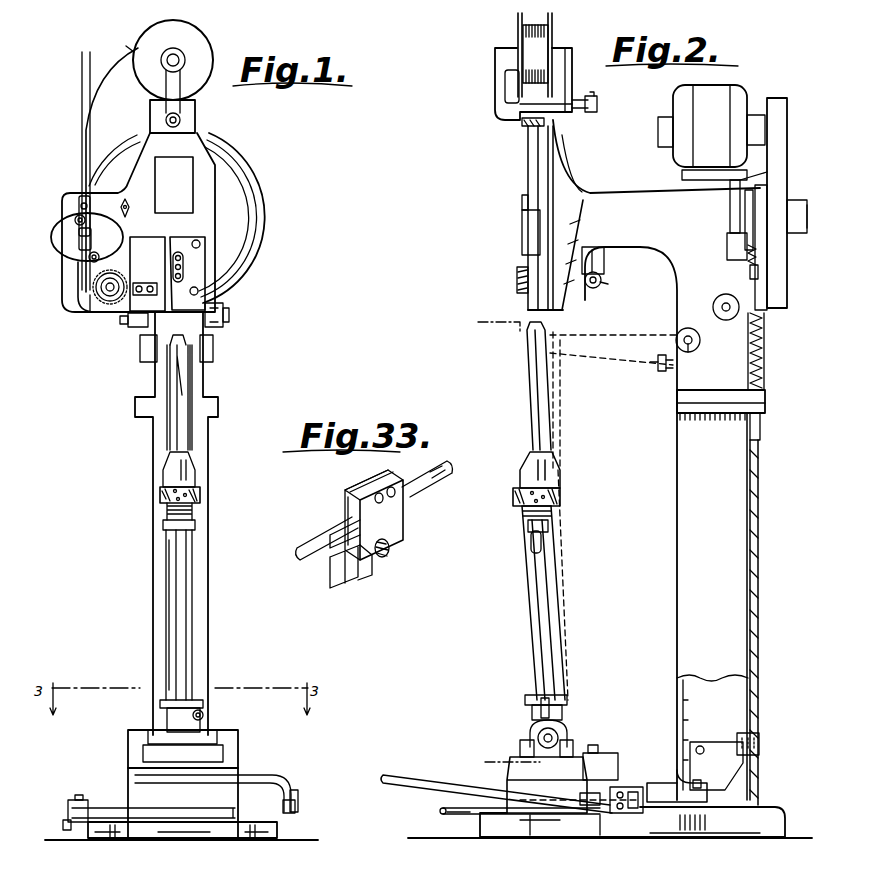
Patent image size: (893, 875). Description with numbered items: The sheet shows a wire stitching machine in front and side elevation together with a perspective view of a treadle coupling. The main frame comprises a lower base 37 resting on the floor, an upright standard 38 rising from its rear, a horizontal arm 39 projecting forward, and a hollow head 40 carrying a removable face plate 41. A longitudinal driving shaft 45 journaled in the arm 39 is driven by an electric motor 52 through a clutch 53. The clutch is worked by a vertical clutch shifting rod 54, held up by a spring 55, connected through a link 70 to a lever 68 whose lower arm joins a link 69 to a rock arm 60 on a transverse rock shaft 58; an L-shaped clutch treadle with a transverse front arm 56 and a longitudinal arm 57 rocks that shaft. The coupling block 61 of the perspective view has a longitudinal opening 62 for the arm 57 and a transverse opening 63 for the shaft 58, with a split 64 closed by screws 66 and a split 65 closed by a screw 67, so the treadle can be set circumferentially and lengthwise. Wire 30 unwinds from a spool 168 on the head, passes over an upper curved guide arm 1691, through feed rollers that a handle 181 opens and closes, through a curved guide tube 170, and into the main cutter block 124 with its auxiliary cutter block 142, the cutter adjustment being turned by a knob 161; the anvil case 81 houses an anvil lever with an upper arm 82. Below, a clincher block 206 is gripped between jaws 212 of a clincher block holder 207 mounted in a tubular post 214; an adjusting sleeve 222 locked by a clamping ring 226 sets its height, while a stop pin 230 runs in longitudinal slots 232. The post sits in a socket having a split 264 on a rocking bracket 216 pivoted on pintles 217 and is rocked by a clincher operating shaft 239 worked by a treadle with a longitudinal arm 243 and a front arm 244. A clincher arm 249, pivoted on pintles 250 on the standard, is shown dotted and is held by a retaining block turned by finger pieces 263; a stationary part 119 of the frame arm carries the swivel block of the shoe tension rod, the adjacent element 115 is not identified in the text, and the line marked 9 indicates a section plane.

In FIG. 1, the wire 30 is at (128, 52).
In FIG. 2, the wire 30 is at (523, 42).
In FIG. 1, the spool 168 is at (192, 30).
In FIG. 2, the spool 168 is at (554, 40).
In FIG. 1, the upper curved guide arm 1691 is at (91, 114).
In FIG. 2, the upper curved guide arm 1691 is at (532, 133).
In FIG. 1, the electric motor 52 is at (203, 121).
In FIG. 33, the electric motor 52 is at (390, 552).
In FIG. 2, the electric motor 52 is at (711, 132).
In FIG. 1, the face plate 41 is at (185, 185).
In FIG. 2, the face plate 41 is at (539, 161).
In FIG. 1, the handle 181 is at (128, 214).
In FIG. 1, the anvil case 81 is at (186, 243).
In FIG. 2, the anvil case 81 is at (528, 245).
In FIG. 1, the upper arm of anvil lever 82 is at (181, 262).
In FIG. 1, the main cutter block 124 is at (147, 274).
In FIG. 1, the auxiliary cutter block 142 is at (150, 278).
In FIG. 1, the clincher block 206 is at (178, 334).
In FIG. 1, the curved guide tube 170 is at (84, 302).
In FIG. 1, the knob 161 is at (104, 300).
In FIG. 2, the knob 161 is at (518, 281).
In FIG. 1, the finger pieces 263 is at (130, 326).
In FIG. 2, the finger pieces 263 is at (720, 298).
In FIG. 1, the clincher block holder 207 is at (172, 437).
In FIG. 2, the clincher block holder 207 is at (526, 410).
In FIG. 1, the adjusting sleeve 222 is at (164, 470).
In FIG. 2, the adjusting sleeve 222 is at (561, 460).
In FIG. 1, the clamping ring 226 is at (200, 497).
In FIG. 2, the clamping ring 226 is at (561, 494).
In FIG. 1, the stop pin 230 is at (164, 525).
In FIG. 2, the stop pin 230 is at (548, 524).
In FIG. 2, the longitudinal slots 232 is at (542, 545).
In FIG. 1, the upright standard 38 is at (153, 604).
In FIG. 2, the upright standard 38 is at (712, 692).
In FIG. 1, the post 214 is at (172, 660).
In FIG. 2, the post 214 is at (540, 653).
In FIG. 1, the rocking bracket 216 is at (190, 726).
In FIG. 2, the rocking bracket 216 is at (566, 725).
In FIG. 2, the pintles 217 is at (533, 737).
In FIG. 1, the jaws 212 is at (236, 740).
In FIG. 2, the jaws 212 is at (567, 740).
In FIG. 1, the front arm of clincher treadle 244 is at (180, 786).
In FIG. 1, the clincher operating shaft 239 is at (301, 798).
In FIG. 2, the clincher operating shaft 239 is at (620, 790).
In FIG. 1, the coupling block 61 is at (290, 790).
In FIG. 33, the coupling block 61 is at (404, 522).
In FIG. 2, the coupling block 61 is at (620, 814).
In FIG. 1, the transverse front arm of clutch treadle 56 is at (122, 814).
In FIG. 2, the transverse front arm of clutch treadle 56 is at (442, 811).
In FIG. 1, the rock shaft 58 is at (63, 825).
In FIG. 1, the base 37 is at (183, 840).
In FIG. 2, the base 37 is at (773, 835).
In FIG. 2, the hollow head 40 is at (570, 182).
In FIG. 2, the horizontal arm 39 is at (631, 507).
In FIG. 2, the clutch 53 is at (745, 211).
In FIG. 2, the driving shaft 45 is at (812, 212).
In FIG. 2, the stationary part of frame arm 119 is at (597, 261).
In FIG. 2, the pivot pin 115 is at (605, 285).
In FIG. 2, the section line 9 is at (503, 547).
In FIG. 2, the clincher arm 249 is at (600, 368).
In FIG. 2, the pivot pintles 250 is at (695, 353).
In FIG. 2, the spring 55 is at (763, 352).
In FIG. 2, the clutch shifting rod 54 is at (762, 419).
In FIG. 2, the link 70 is at (756, 528).
In FIG. 2, the vertical split 264 is at (527, 698).
In FIG. 2, the link 69 is at (662, 790).
In FIG. 2, the panel 68 is at (724, 761).
In FIG. 2, the rear longitudinal arm of clincher treadle 243 is at (438, 778).
In FIG. 2, the rock arm 60 is at (583, 795).
In FIG. 33, the longitudinal arm of clutch treadle 57 is at (298, 554).
In FIG. 2, the longitudinal arm of clutch treadle 57 is at (462, 814).
In FIG. 33, the split 64 is at (358, 488).
In FIG. 33, the tightening screws 66 is at (394, 498).
In FIG. 33, the longitudinal opening 62 is at (400, 535).
In FIG. 33, the transverse opening 63 is at (392, 563).
In FIG. 33, the screw 67 is at (340, 542).
In FIG. 33, the split 65 is at (348, 572).